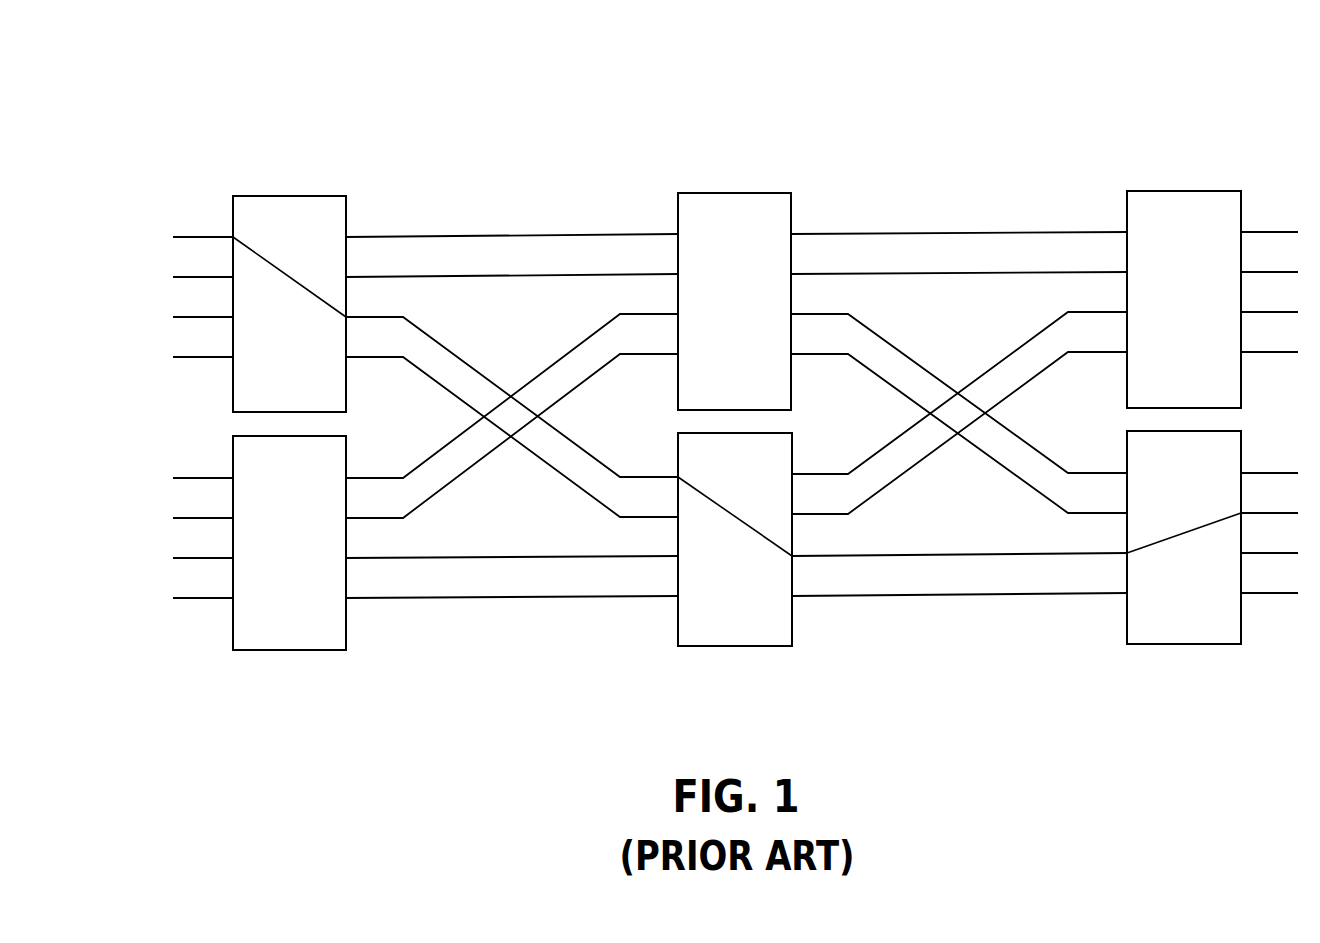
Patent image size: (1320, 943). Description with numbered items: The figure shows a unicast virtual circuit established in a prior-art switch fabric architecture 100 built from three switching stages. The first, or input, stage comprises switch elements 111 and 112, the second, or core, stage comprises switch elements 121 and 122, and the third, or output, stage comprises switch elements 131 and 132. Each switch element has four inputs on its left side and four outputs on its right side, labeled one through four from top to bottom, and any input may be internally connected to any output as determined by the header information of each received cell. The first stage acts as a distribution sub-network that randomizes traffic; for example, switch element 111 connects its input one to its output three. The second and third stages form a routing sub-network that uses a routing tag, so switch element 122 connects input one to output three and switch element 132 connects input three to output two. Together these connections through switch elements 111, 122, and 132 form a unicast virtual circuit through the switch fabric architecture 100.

The switch fabric architecture 100 is at (472, 85).
The switch element 111 is at (288, 196).
The switch element 112 is at (289, 650).
The switch element 121 is at (733, 193).
The switch element 122 is at (735, 646).
The switch element 131 is at (1183, 191).
The switch element 132 is at (1185, 644).